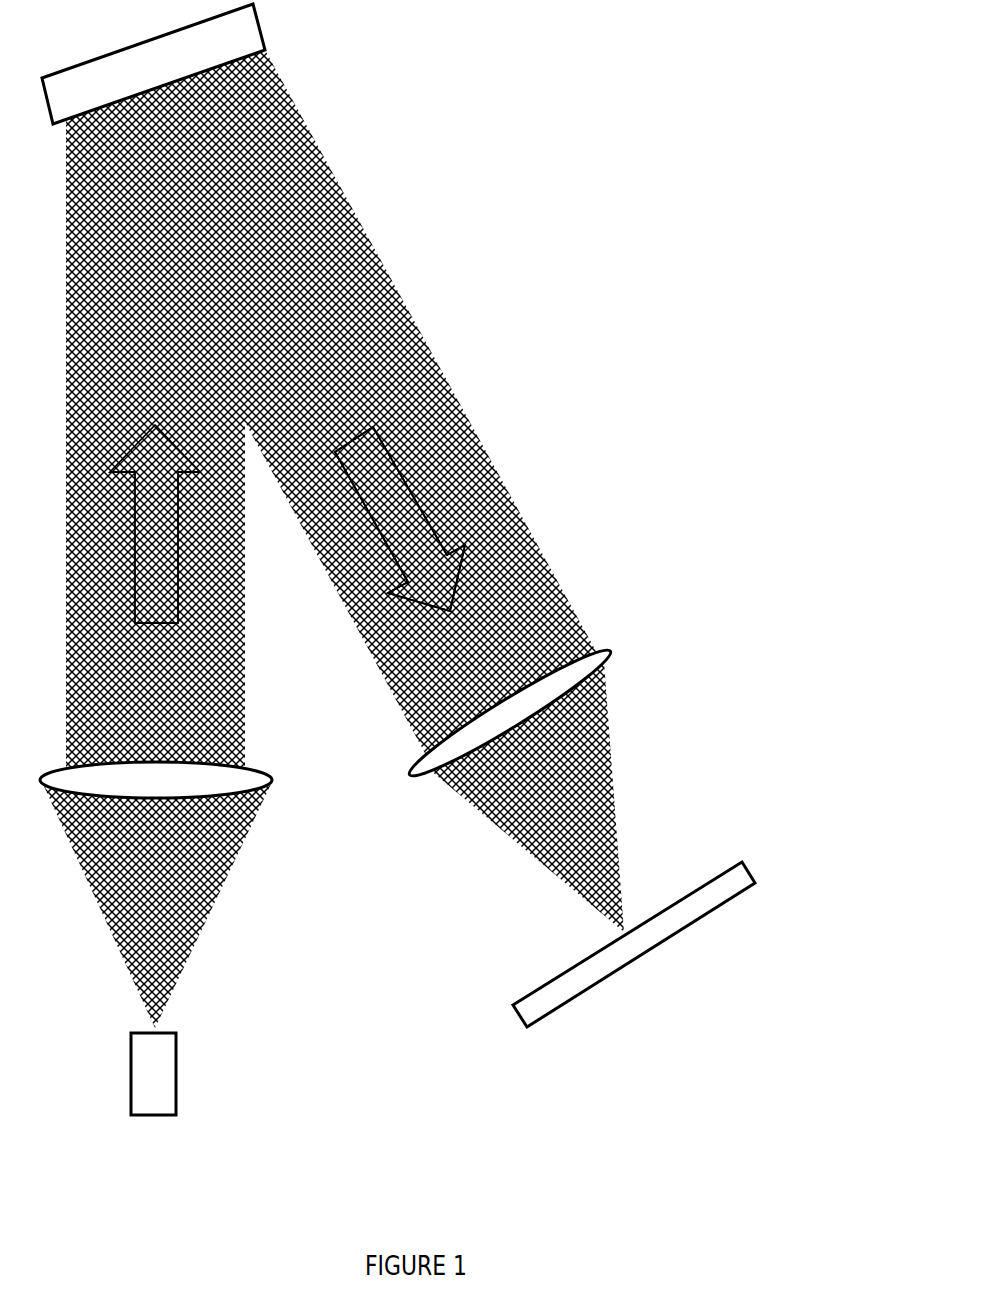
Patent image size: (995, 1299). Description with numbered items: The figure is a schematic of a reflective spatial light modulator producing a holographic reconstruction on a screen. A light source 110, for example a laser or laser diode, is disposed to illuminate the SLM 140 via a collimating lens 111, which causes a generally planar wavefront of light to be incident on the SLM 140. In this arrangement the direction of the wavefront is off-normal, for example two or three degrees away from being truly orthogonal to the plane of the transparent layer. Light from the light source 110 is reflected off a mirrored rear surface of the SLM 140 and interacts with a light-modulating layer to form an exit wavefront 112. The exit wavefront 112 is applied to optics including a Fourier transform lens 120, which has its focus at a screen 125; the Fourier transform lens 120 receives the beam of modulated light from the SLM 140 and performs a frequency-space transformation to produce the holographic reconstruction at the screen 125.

The light source 110 is at (178, 1078).
The collimating lens 111 is at (262, 790).
The exit wavefront 112 is at (465, 442).
The Fourier transform lens 120 is at (606, 650).
The screen 125 is at (600, 980).
The SLM 140 is at (267, 42).